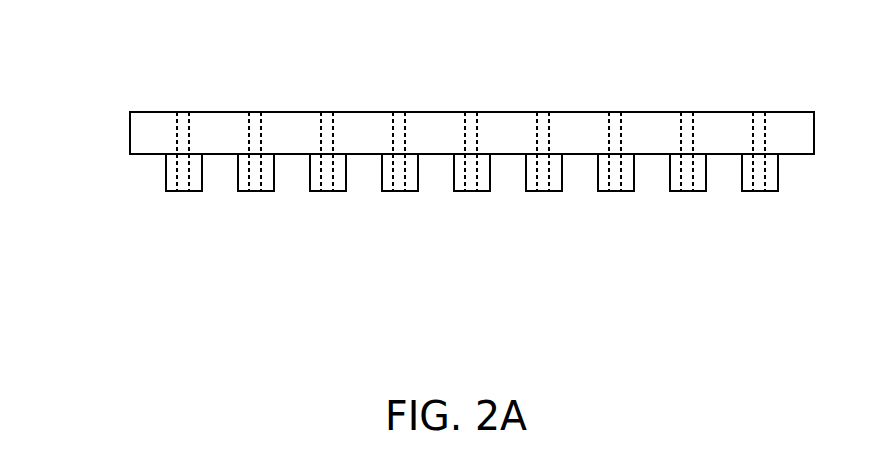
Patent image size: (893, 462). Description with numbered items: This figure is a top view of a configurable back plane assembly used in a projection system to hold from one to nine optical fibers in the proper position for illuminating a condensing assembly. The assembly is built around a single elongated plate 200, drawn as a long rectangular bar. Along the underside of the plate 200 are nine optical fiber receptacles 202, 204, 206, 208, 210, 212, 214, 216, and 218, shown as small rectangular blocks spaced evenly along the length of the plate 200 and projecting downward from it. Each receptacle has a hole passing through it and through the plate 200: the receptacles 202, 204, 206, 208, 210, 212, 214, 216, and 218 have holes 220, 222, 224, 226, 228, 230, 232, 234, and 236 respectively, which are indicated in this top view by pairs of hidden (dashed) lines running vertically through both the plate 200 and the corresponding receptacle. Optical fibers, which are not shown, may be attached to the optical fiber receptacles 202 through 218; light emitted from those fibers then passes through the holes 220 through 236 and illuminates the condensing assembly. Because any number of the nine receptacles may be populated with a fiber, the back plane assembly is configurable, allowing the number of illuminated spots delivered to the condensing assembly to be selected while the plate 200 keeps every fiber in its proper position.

The plate 200 is at (130, 129).
The optical fiber receptacle 202 is at (166, 191).
The optical fiber receptacle 204 is at (238, 191).
The optical fiber receptacle 206 is at (310, 191).
The optical fiber receptacle 208 is at (382, 191).
The optical fiber receptacle 210 is at (454, 191).
The optical fiber receptacle 212 is at (526, 191).
The optical fiber receptacle 214 is at (598, 191).
The optical fiber receptacle 216 is at (670, 191).
The optical fiber receptacle 218 is at (742, 191).
The hole 220 is at (177, 112).
The hole 222 is at (249, 112).
The hole 224 is at (321, 112).
The hole 226 is at (393, 112).
The hole 228 is at (465, 112).
The hole 230 is at (537, 112).
The hole 232 is at (609, 112).
The hole 234 is at (681, 112).
The hole 236 is at (753, 112).